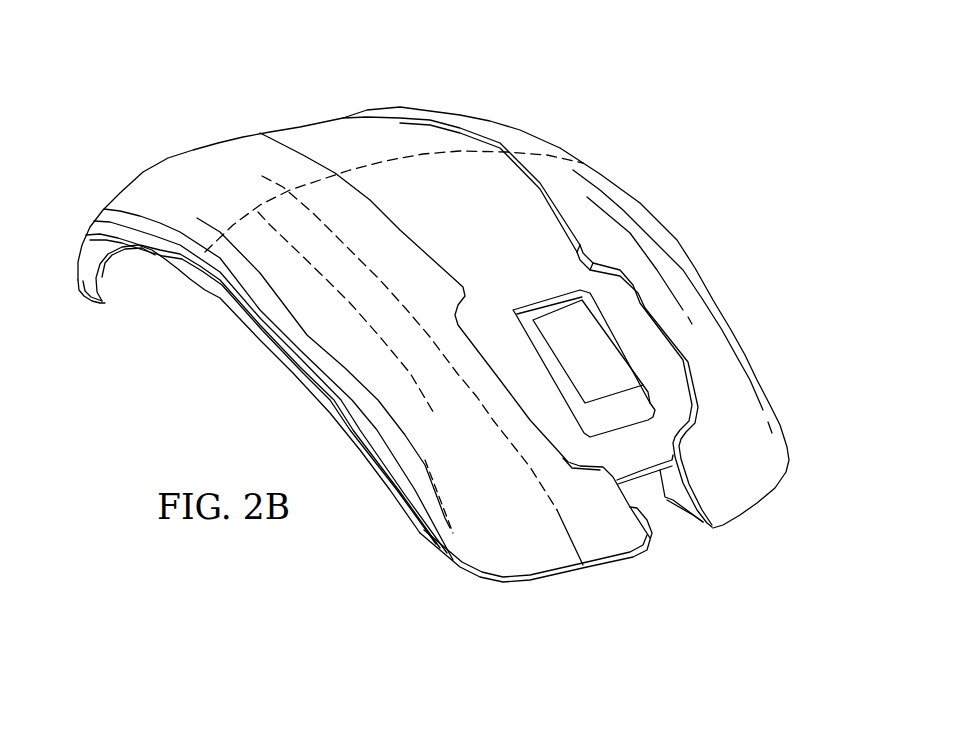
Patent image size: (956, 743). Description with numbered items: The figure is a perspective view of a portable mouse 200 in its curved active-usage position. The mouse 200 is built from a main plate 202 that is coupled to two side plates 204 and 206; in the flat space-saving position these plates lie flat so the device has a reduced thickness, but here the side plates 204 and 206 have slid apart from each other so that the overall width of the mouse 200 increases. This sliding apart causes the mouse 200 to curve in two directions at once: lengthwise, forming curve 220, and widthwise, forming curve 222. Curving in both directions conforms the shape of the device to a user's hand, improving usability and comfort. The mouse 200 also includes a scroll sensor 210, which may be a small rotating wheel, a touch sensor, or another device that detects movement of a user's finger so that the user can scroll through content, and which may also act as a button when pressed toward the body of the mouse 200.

The mouse 200 is at (640, 161).
The main plate 202 is at (298, 122).
The side plate 204 is at (172, 178).
The side plate 206 is at (513, 141).
The scroll sensor 210 is at (755, 362).
The curve 220 is at (524, 458).
The curve 222 is at (427, 155).